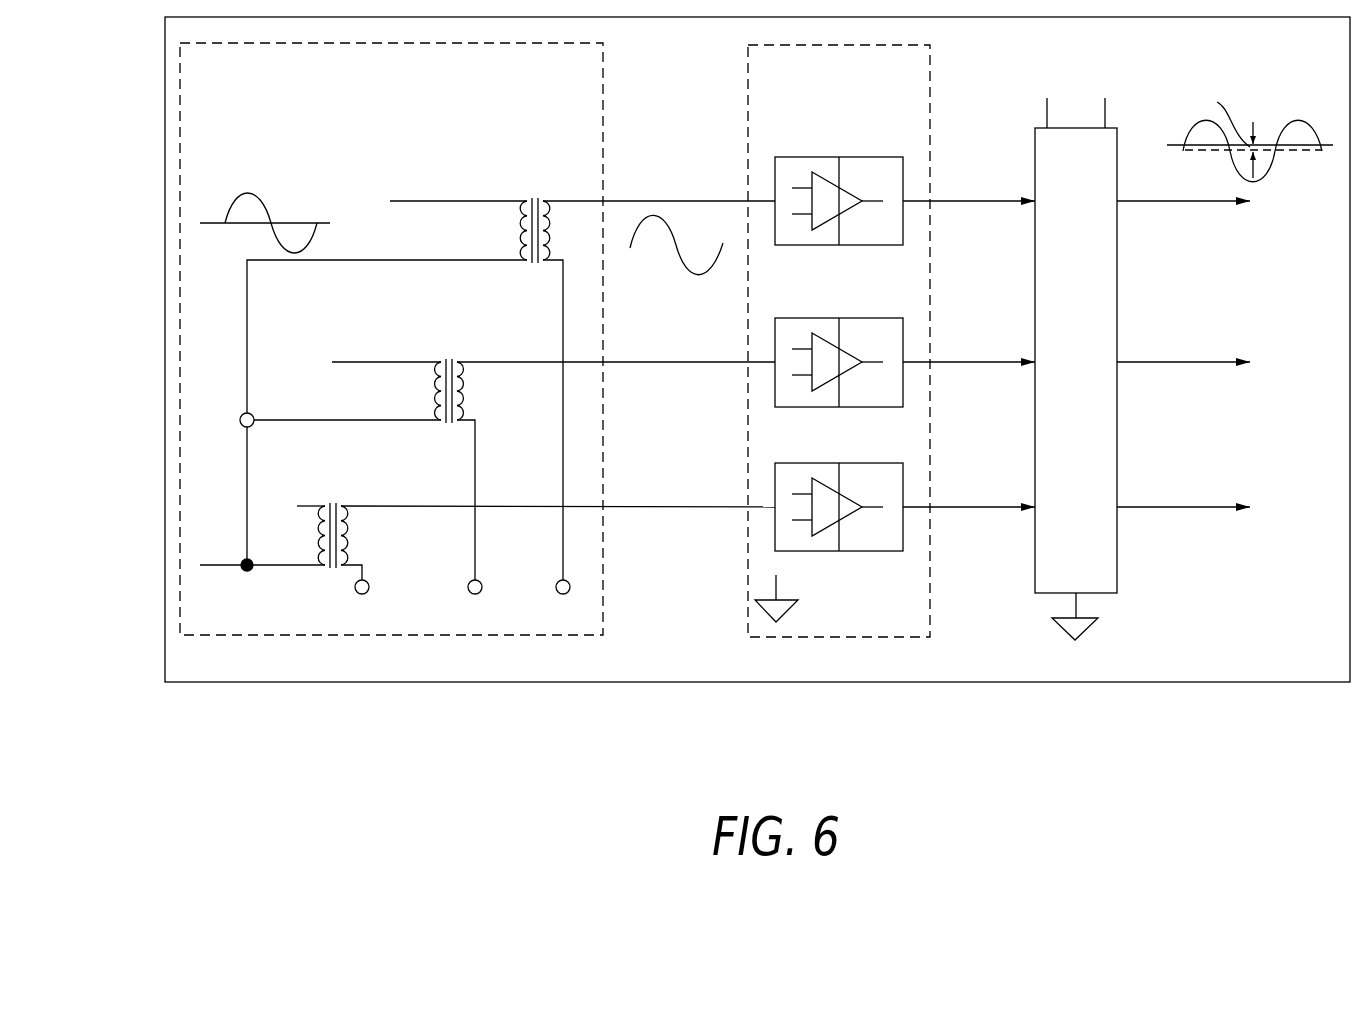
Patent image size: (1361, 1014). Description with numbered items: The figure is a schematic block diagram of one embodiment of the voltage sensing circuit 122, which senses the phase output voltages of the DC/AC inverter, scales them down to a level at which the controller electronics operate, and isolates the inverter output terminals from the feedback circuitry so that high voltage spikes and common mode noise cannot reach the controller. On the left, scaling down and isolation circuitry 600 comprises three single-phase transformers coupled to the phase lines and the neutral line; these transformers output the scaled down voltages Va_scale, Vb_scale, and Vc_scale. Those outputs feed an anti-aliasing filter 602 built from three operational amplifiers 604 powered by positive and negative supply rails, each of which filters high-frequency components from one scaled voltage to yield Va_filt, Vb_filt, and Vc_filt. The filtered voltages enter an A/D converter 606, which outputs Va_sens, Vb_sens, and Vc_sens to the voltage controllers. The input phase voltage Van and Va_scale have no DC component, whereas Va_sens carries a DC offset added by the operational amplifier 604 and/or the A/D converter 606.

The voltage sensing circuit 122 is at (165, 248).
The scaling down and isolation circuitry 600 is at (603, 82).
The anti-aliasing filter 602 is at (891, 338).
The operational amplifier 604 is at (903, 232).
The A/D converter 606 is at (1117, 283).